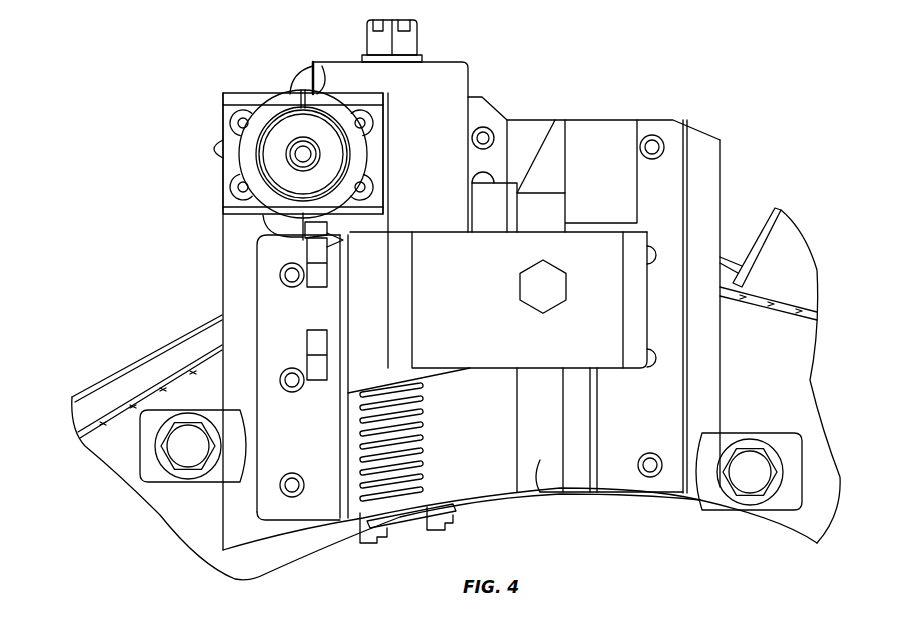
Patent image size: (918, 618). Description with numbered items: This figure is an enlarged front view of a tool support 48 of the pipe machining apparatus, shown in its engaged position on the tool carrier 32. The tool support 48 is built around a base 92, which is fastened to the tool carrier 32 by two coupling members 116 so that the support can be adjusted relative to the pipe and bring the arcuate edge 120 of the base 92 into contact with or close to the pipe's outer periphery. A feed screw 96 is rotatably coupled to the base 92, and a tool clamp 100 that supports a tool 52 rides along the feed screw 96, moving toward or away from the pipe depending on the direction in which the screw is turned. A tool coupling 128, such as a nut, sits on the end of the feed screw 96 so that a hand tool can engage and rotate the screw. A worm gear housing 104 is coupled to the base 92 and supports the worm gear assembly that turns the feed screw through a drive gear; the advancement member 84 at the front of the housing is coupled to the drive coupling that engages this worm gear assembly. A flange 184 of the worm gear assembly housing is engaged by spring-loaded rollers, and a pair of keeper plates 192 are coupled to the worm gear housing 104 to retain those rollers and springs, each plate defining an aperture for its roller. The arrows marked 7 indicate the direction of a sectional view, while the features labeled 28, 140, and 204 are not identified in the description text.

The section view indicator 7 is at (194, 156).
The rail strip 28 is at (110, 368).
The tool carrier 32 is at (105, 442).
The tool support 48 is at (590, 78).
The tool 52 is at (547, 495).
The advancement member 84 is at (303, 78).
The base 92 is at (700, 143).
The feed screw 96 is at (422, 437).
The tool clamp 100 is at (486, 318).
The worm gear housing 104 is at (432, 117).
The coupling members 116 is at (178, 496).
The arcuate edge 120 is at (377, 547).
The tool coupling 128 is at (408, 42).
The bearing 140 is at (270, 120).
The flange 184 is at (250, 173).
The keeper plates 192 is at (230, 150).
The slot key 204 is at (303, 100).